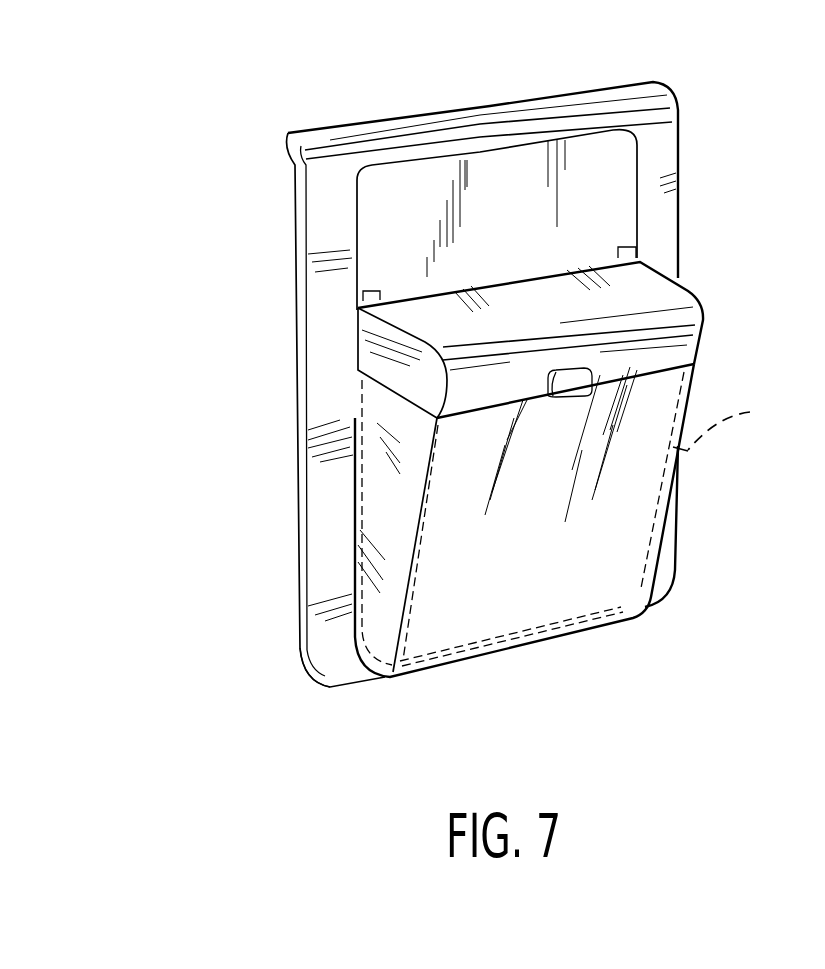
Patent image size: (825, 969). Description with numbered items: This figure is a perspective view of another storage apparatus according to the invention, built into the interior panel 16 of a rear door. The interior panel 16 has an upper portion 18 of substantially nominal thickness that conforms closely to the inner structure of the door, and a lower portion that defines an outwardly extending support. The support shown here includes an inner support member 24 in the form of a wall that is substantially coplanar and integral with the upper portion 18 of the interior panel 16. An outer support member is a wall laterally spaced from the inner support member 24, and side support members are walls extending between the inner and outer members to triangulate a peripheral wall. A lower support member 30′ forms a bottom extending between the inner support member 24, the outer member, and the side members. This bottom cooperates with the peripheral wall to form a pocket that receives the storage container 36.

The interior panel 16 is at (340, 150).
The upper portion 18 is at (603, 158).
The inner support member 24 is at (353, 495).
The lower support member 30′ is at (527, 647).
The storage container 36 is at (732, 421).